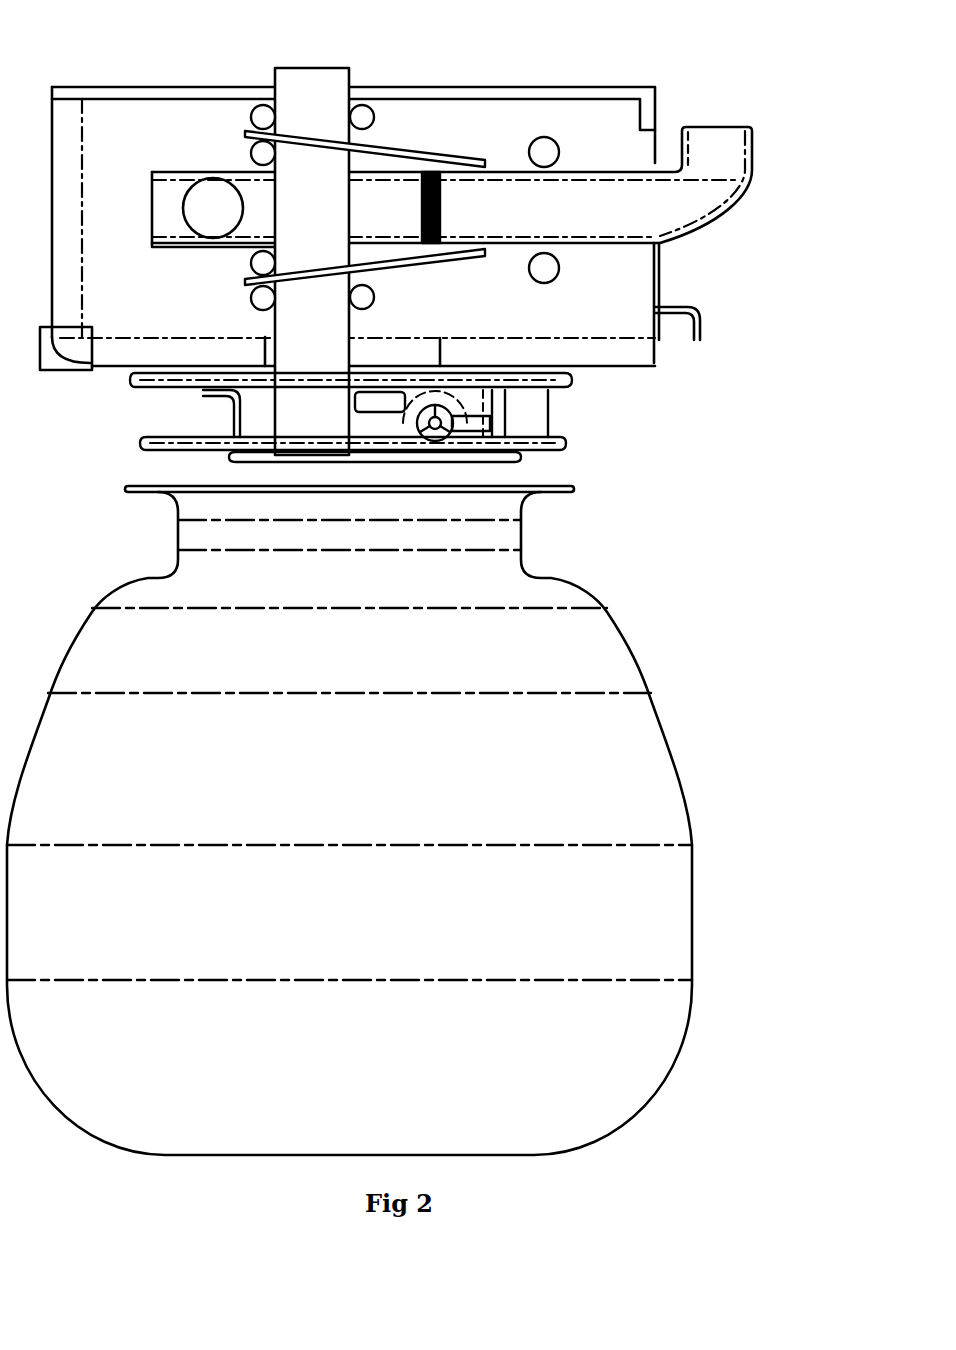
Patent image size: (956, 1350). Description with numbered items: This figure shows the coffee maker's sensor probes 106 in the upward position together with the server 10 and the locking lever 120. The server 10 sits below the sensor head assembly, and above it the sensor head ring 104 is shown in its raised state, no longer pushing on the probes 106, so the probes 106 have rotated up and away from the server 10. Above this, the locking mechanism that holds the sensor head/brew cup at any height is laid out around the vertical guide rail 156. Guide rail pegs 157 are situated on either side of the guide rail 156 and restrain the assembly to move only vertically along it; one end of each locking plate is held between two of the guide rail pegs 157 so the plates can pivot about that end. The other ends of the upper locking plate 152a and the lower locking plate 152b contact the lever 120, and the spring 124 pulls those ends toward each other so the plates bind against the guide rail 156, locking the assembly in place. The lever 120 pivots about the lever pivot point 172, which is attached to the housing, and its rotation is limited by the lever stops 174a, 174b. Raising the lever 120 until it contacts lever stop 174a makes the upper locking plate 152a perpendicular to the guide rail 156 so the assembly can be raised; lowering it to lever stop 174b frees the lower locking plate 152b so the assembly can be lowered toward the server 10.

The server 10 is at (616, 677).
The sensor head ring 104 is at (560, 450).
The sensor probes 106 is at (488, 412).
The lever 120 is at (683, 200).
The spring 124 is at (440, 204).
The upper locking plate 152a is at (403, 152).
The lower locking plate 152b is at (440, 258).
The guide rail 156 is at (335, 82).
The guide rail pegs 157 is at (245, 143).
The lever pivot point 172 is at (205, 207).
The lever stop 174a is at (547, 145).
The lever stop 174b is at (548, 268).